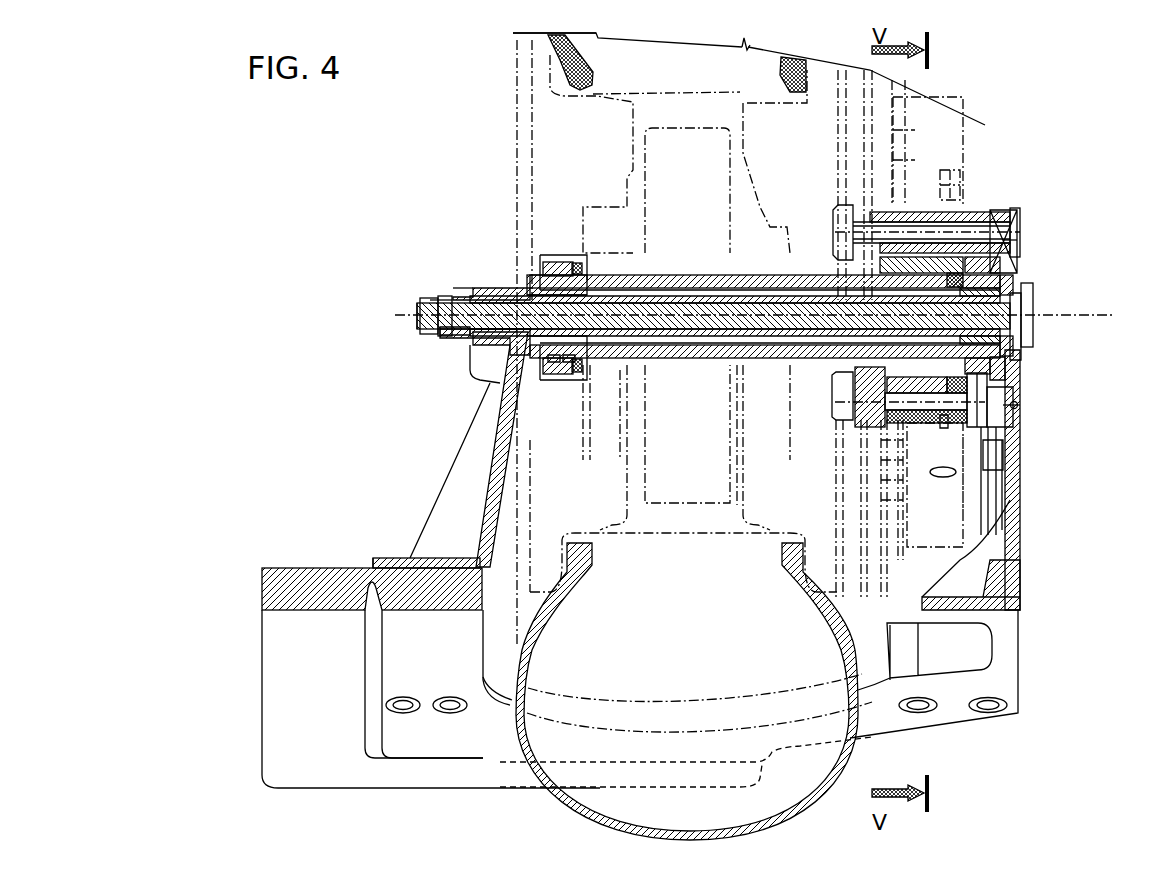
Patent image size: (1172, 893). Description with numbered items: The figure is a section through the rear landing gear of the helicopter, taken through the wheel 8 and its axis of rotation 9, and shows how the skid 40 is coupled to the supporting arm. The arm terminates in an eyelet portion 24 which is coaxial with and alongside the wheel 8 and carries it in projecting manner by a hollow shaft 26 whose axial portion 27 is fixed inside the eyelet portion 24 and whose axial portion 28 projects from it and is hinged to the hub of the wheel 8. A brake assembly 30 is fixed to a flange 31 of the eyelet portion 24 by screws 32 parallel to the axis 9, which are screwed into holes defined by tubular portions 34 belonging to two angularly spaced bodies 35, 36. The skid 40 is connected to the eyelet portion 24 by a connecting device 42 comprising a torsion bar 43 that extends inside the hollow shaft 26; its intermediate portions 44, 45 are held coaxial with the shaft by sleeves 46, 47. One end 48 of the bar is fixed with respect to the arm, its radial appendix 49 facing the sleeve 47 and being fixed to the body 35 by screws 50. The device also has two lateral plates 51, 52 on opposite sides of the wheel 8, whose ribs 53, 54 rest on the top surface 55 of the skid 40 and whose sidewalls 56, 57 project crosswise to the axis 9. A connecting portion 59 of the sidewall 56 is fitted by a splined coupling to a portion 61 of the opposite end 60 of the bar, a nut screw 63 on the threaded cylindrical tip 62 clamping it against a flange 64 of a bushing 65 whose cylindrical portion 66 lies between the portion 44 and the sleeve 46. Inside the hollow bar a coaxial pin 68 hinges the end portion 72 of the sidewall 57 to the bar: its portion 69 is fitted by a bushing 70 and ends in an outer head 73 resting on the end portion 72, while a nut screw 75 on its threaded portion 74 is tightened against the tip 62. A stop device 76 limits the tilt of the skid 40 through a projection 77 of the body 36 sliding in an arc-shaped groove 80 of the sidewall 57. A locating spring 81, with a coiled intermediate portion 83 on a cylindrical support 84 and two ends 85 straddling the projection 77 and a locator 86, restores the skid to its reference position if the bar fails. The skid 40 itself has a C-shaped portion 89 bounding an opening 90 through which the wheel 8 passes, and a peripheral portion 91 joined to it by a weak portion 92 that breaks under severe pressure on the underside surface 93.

The wheel 8 is at (598, 100).
The axis of rotation 9 is at (1118, 310).
The eyelet portion 24 is at (992, 247).
The hollow shaft 26 is at (710, 276).
The axial portion 27 is at (937, 278).
The axial portion 28 is at (690, 276).
The brake assembly 30 is at (842, 120).
The flange 31 is at (875, 207).
The screws 32 is at (835, 222).
The tubular portions 34 is at (917, 217).
The body 35 is at (960, 203).
The body 36 is at (952, 433).
The skid 40 is at (1013, 717).
The connecting device 42 is at (457, 271).
The torsion bar 43 is at (703, 316).
The intermediate portion 44 is at (568, 375).
The intermediate portion 45 is at (1007, 247).
The sleeve 46 is at (553, 362).
The sleeve 47 is at (1007, 277).
The end 48 is at (1007, 293).
The radial appendix 49 is at (1003, 212).
The screws 50 is at (1012, 212).
The lateral plate 51 is at (437, 484).
The lateral plate 52 is at (1013, 563).
The rib 53 is at (430, 557).
The rib 54 is at (1007, 575).
The top surface 55 is at (388, 558).
The sidewall 56 is at (498, 423).
The sidewall 57 is at (1018, 510).
The connecting portion 59 is at (492, 285).
The end 60 is at (460, 334).
The portion 61 is at (473, 334).
The threaded cylindrical tip 62 is at (450, 288).
The nut screw 63 is at (450, 284).
The flange 64 is at (500, 288).
The bushing 65 is at (500, 352).
The cylindrical portion 66 is at (538, 290).
The pin 68 is at (707, 325).
The portion 69 is at (1003, 333).
The bushing 70 is at (1003, 353).
The end portion 72 is at (1023, 333).
The outer head 73 is at (1027, 322).
The threaded portion 74 is at (423, 303).
The nut screw 75 is at (454, 296).
The stop device 76 is at (1030, 433).
The projection 77 is at (1017, 406).
The groove 80 is at (1006, 423).
The locating spring 81 is at (1000, 567).
The intermediate portion 83 is at (1017, 543).
The cylindrical support 84 is at (1007, 500).
The ends 85 is at (992, 440).
The locator 86 is at (990, 447).
The portion 89 is at (407, 645).
The opening 90 is at (497, 688).
The peripheral portion 91 is at (275, 632).
The weak portion 92 is at (372, 600).
The underside surface 93 is at (392, 680).